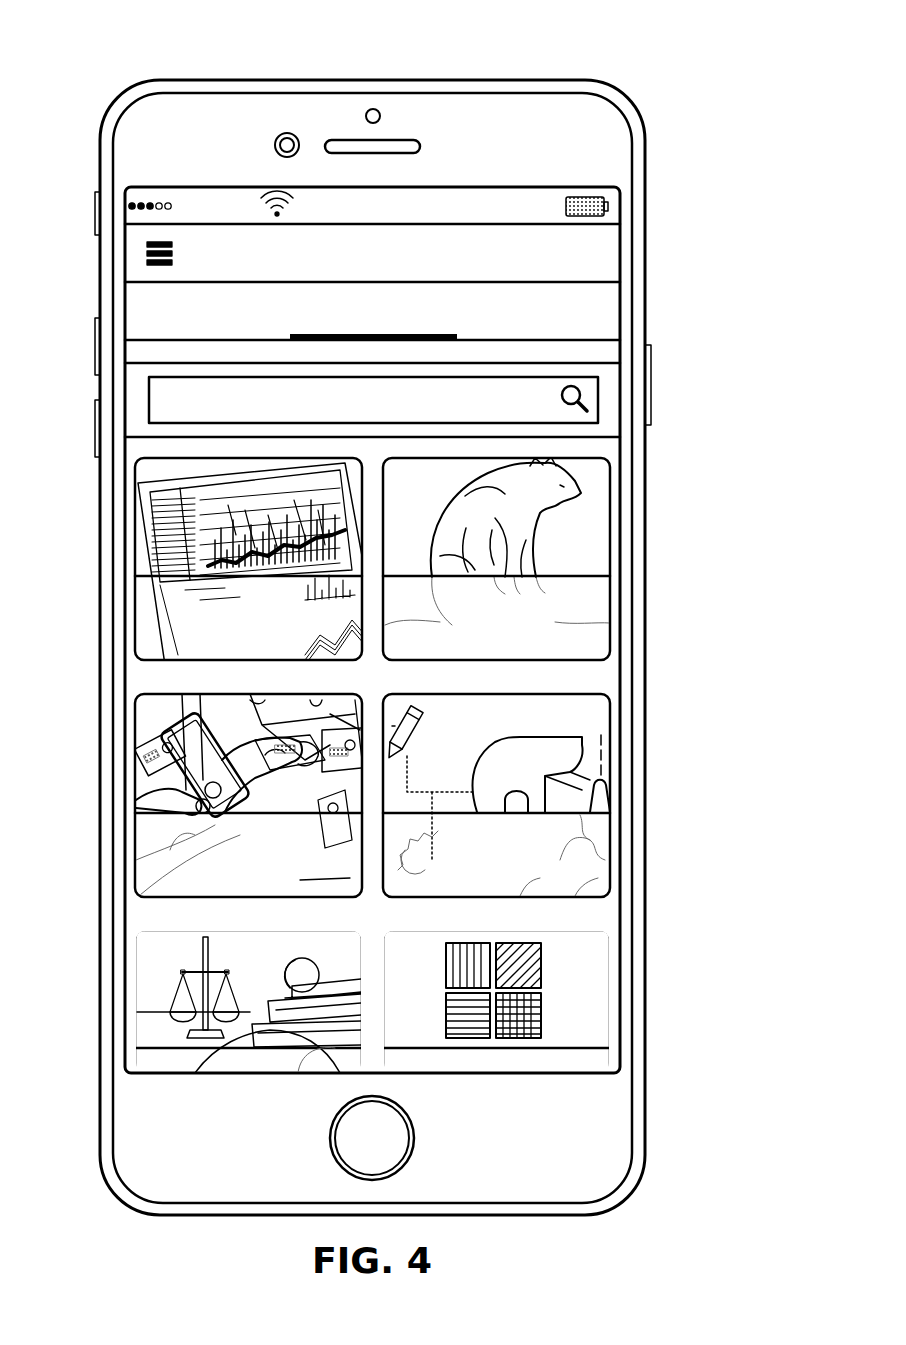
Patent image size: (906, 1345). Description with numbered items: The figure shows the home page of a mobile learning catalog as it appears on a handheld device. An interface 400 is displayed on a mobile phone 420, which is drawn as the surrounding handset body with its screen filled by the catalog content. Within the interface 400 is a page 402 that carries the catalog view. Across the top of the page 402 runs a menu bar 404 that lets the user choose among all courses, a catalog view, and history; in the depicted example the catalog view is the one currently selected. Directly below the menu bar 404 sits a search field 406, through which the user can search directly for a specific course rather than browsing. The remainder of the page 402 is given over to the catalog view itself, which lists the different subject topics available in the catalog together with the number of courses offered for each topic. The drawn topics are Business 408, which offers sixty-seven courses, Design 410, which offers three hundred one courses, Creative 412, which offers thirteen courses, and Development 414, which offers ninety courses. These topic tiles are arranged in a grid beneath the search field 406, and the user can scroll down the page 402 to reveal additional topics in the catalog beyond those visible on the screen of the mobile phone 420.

The interface 400 is at (735, 222).
The page 402 is at (608, 252).
The menu bar 404 is at (136, 318).
The search field 406 is at (148, 398).
The Business 408 is at (137, 560).
The Design 410 is at (137, 826).
The Creative 412 is at (612, 560).
The Development 414 is at (612, 825).
The mobile phone 420 is at (262, 77).